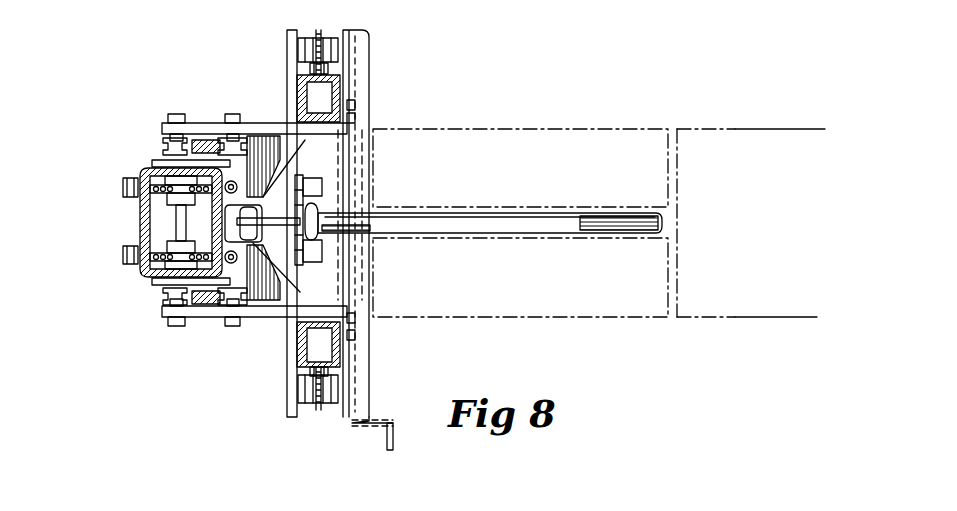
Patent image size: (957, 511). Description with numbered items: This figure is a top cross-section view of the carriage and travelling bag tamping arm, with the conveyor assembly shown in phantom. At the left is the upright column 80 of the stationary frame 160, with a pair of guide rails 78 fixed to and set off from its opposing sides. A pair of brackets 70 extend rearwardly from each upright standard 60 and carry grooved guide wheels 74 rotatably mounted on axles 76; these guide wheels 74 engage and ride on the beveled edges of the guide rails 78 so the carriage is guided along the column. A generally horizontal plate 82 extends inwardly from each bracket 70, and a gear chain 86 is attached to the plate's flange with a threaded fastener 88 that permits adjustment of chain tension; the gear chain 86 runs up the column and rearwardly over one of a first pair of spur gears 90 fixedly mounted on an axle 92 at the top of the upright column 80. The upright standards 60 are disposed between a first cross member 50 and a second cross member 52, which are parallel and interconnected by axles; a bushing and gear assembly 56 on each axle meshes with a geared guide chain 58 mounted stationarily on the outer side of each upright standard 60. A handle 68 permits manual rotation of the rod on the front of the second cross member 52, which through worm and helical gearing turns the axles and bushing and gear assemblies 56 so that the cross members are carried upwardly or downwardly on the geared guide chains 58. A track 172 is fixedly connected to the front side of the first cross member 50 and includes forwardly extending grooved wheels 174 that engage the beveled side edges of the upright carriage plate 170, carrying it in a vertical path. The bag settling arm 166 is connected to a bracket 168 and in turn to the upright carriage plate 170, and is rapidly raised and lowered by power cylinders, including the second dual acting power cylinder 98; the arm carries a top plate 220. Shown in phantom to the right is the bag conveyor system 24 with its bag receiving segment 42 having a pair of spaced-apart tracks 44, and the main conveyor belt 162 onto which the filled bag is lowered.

The stationary frame 160 is at (95, 162).
The first cross member 50 is at (287, 32).
The second cross member 52 is at (350, 62).
The bushing and gear assembly 56 is at (322, 40).
The geared guide chain 58 is at (305, 70).
The upright standard 60 is at (341, 92).
The handle 68 is at (388, 449).
The bracket 70 is at (193, 124).
The axle 76 is at (166, 122).
The grooved guide wheel 74 is at (165, 145).
The guide rail 78 is at (206, 138).
The spur gear 90 is at (152, 164).
The upright column 80 is at (142, 240).
The axle 92 is at (170, 214).
The second dual acting power cylinder 98 is at (176, 222).
The gear chain 86 is at (123, 186).
The threaded fastener 88 is at (232, 221).
The horizontal plate 82 is at (303, 160).
The grooved wheel 174 is at (318, 192).
The upright carriage plate 170 is at (313, 210).
The bracket 168 is at (320, 218).
The track 172 is at (320, 265).
The bag settling arm 166 is at (498, 208).
The track 44 is at (598, 128).
The bag receiving segment 42 is at (514, 124).
The top plate 220 is at (529, 226).
The bag conveyor system 24 is at (778, 124).
The conveyor belt 162 is at (745, 318).